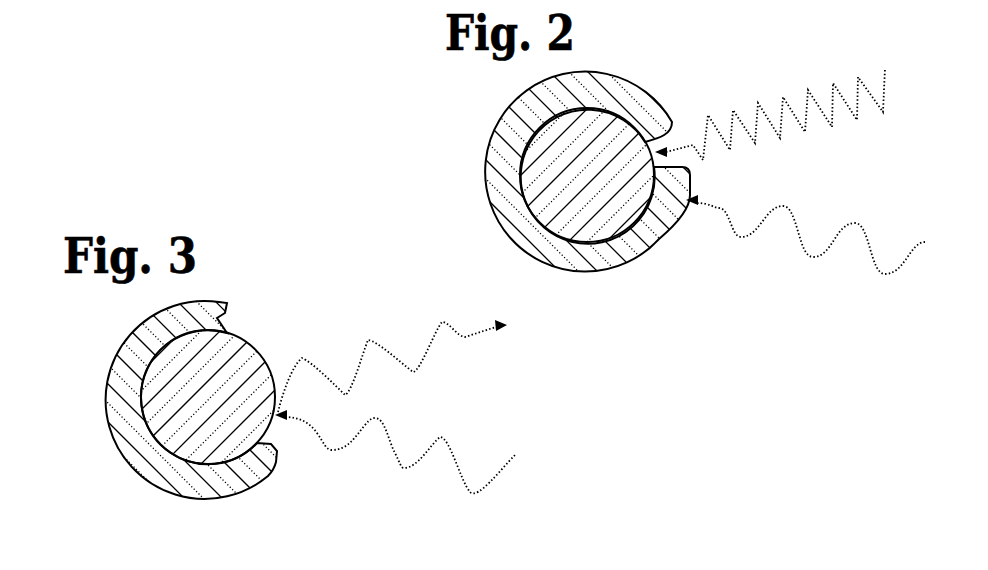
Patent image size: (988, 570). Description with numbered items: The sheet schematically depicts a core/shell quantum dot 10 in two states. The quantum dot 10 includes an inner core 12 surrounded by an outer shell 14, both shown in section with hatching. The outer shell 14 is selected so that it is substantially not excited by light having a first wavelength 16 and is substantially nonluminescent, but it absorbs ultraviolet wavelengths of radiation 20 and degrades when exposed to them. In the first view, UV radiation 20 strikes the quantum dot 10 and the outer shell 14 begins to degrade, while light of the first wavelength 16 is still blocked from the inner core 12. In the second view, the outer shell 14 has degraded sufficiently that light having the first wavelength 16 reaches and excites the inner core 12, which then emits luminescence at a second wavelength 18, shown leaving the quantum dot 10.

In FIG. 2, the core/shell quantum dot 10 is at (556, 244).
In FIG. 3, the core/shell quantum dot 10 is at (154, 340).
In FIG. 2, the inner core 12 is at (574, 242).
In FIG. 3, the inner core 12 is at (143, 411).
In FIG. 2, the outer shell 14 is at (625, 268).
In FIG. 3, the outer shell 14 is at (170, 493).
In FIG. 2, the first wavelength 16 is at (855, 223).
In FIG. 3, the first wavelength 16 is at (440, 437).
In FIG. 3, the second wavelength 18 is at (368, 340).
In FIG. 2, the UV radiation 20 is at (859, 75).